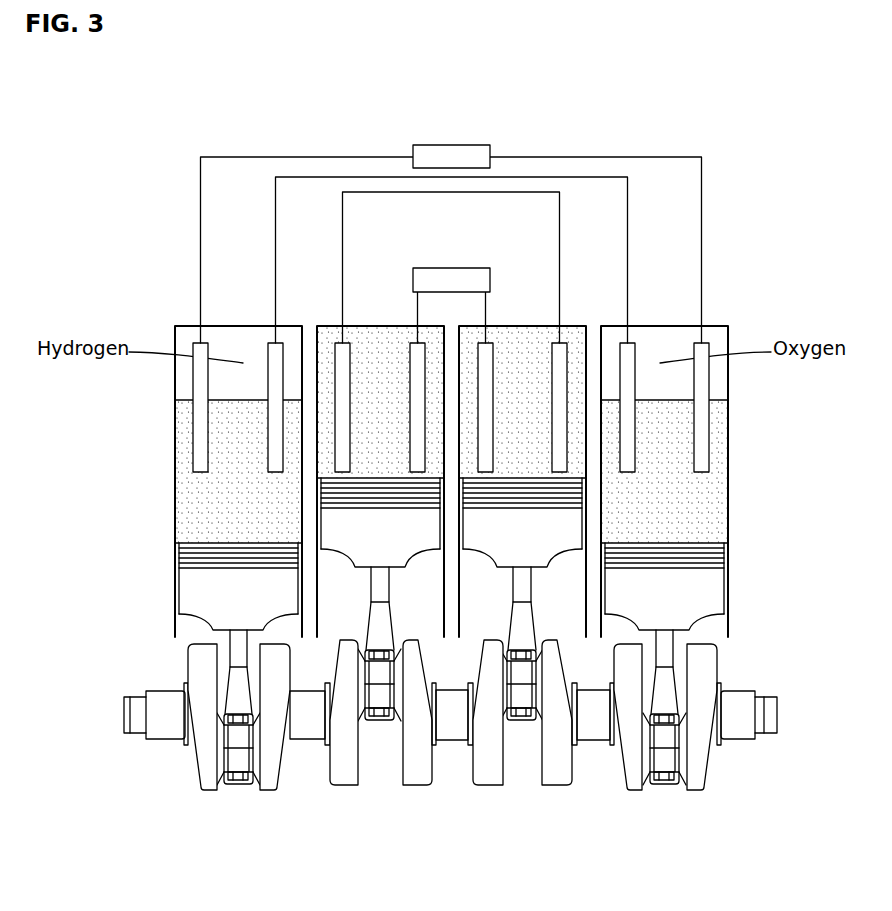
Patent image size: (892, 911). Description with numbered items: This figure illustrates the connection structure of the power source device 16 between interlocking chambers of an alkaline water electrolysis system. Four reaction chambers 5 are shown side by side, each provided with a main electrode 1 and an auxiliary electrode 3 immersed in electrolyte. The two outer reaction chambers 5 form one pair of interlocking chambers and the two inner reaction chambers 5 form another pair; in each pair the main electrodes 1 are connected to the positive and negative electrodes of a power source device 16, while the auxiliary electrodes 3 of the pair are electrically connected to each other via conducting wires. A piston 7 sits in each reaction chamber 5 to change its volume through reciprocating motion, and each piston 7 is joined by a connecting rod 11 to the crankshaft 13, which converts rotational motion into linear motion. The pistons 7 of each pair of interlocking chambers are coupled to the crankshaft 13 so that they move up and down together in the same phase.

The main electrode 1 is at (203, 380).
The auxiliary electrode 3 is at (270, 340).
The reaction chamber 5 is at (183, 326).
The piston 7 is at (197, 596).
The connecting rod 11 is at (232, 640).
The crankshaft 13 is at (165, 730).
The power source device 16 is at (452, 145).